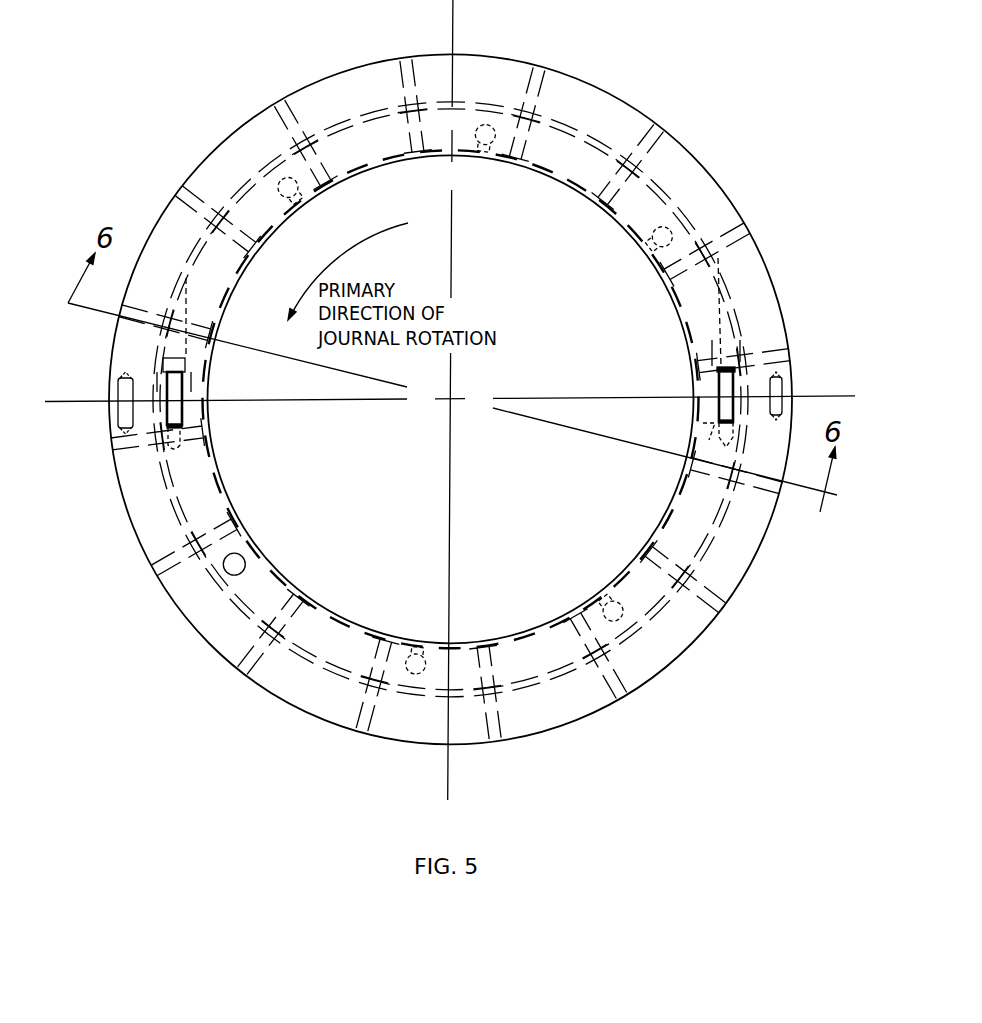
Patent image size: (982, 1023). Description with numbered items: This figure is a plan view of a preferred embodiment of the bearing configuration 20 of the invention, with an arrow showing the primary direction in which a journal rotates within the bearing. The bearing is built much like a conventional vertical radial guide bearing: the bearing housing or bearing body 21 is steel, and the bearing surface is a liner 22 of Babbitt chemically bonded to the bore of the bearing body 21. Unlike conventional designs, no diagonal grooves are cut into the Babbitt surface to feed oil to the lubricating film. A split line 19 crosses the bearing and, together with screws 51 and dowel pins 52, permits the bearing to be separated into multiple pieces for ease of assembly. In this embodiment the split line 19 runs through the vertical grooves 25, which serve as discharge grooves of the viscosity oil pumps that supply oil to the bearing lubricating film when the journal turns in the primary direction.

The split line 19 is at (825, 395).
The bearing configuration 20 is at (305, 72).
The bearing body 21 is at (177, 225).
The liner 22 is at (267, 238).
The vertical grooves 25 is at (693, 397).
The screws 51 is at (163, 362).
The dowel pins 52 is at (775, 388).